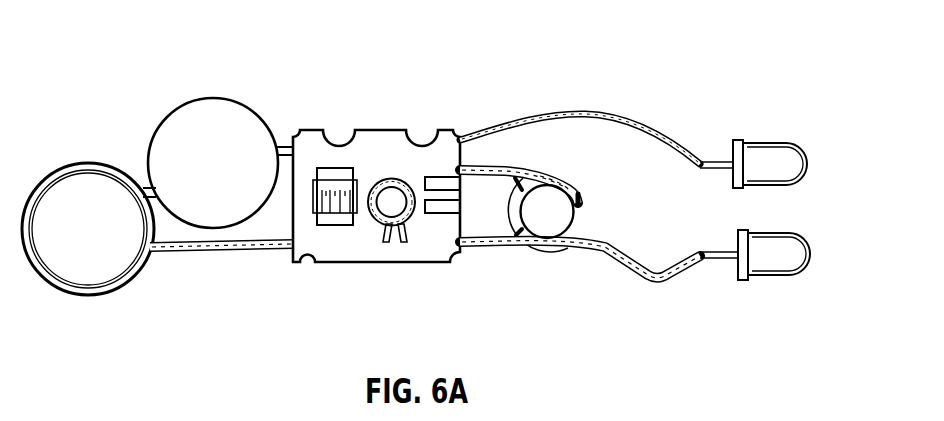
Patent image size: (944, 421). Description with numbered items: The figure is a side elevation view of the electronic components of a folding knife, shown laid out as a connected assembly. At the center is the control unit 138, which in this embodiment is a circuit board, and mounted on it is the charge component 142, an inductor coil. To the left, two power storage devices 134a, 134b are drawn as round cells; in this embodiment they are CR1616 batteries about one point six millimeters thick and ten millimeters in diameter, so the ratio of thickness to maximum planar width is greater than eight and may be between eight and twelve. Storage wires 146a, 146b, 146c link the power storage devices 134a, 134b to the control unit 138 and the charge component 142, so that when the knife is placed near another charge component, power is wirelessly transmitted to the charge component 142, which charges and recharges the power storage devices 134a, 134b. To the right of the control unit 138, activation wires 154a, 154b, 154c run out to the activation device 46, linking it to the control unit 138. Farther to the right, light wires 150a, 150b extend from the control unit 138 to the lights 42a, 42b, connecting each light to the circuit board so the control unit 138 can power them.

The power storage device 134a is at (88, 193).
The power storage device 134b is at (217, 113).
The storage wire 146a is at (227, 253).
The storage wire 146b is at (147, 193).
The storage wire 146c is at (287, 148).
The control unit 138 is at (397, 140).
The charge component 142 is at (377, 227).
The activation wire 154a is at (493, 167).
The activation wire 154b is at (525, 170).
The activation wire 154c is at (469, 248).
The activation device 46 is at (547, 204).
The light wire 150a is at (667, 137).
The light wire 150b is at (672, 278).
The light 42a is at (775, 142).
The light 42b is at (775, 280).